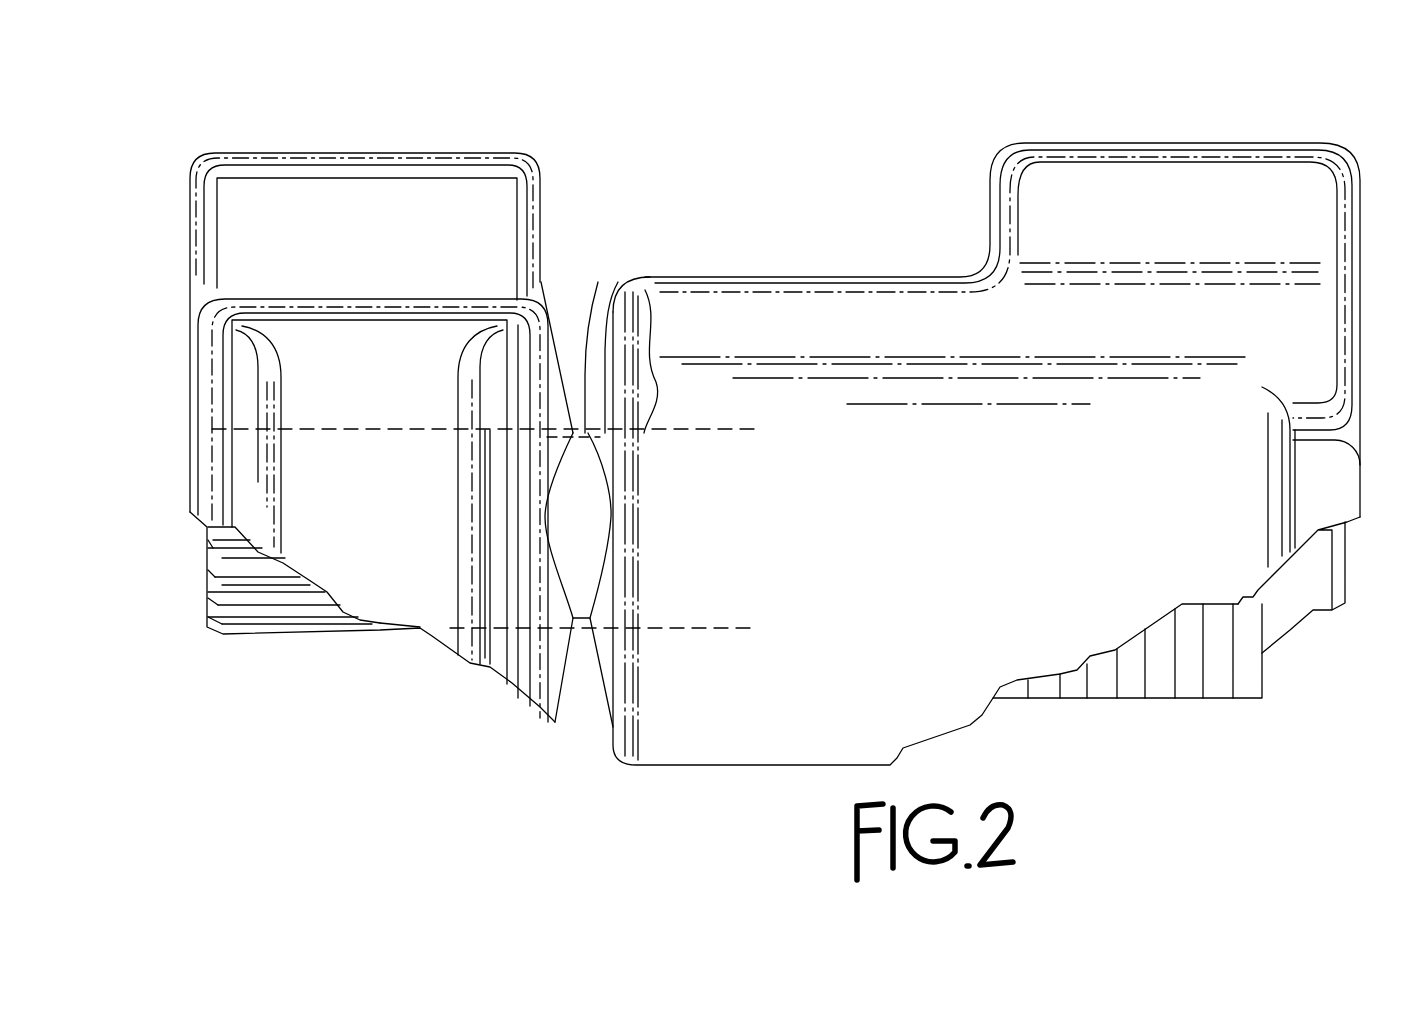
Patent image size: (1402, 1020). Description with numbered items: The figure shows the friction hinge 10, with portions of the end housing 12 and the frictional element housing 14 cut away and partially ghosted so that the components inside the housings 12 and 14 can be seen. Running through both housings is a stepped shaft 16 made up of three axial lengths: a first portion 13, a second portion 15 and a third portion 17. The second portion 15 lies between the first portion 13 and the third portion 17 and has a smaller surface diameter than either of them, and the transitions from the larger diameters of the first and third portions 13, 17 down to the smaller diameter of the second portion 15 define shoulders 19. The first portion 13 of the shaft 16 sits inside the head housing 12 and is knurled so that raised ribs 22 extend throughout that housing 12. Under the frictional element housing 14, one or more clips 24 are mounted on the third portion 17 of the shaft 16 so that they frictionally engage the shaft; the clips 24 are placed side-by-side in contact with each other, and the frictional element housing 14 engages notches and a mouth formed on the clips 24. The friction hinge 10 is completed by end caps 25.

The friction hinge 10 is at (763, 228).
The end housing 12 is at (265, 146).
The first portion 13 is at (532, 430).
The frictional element housing 14 is at (853, 268).
The second portion 15 is at (598, 282).
The shaft 16 is at (621, 638).
The third portion 17 is at (618, 282).
The shoulders 19 is at (515, 683).
The raised ribs 22 is at (210, 583).
The clips 24 is at (1253, 688).
The end caps 25 is at (650, 278).